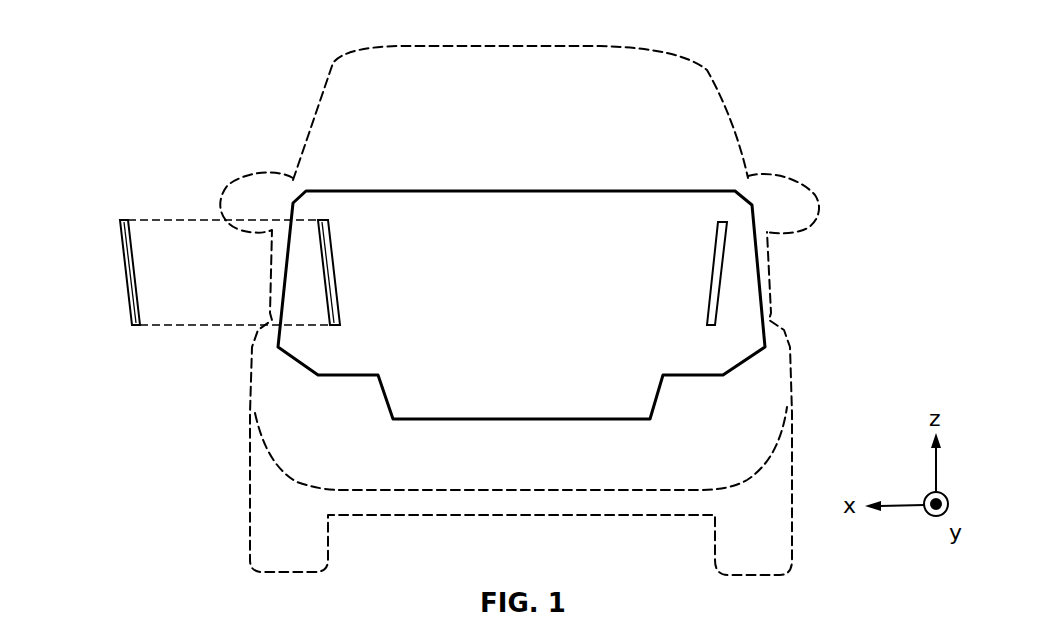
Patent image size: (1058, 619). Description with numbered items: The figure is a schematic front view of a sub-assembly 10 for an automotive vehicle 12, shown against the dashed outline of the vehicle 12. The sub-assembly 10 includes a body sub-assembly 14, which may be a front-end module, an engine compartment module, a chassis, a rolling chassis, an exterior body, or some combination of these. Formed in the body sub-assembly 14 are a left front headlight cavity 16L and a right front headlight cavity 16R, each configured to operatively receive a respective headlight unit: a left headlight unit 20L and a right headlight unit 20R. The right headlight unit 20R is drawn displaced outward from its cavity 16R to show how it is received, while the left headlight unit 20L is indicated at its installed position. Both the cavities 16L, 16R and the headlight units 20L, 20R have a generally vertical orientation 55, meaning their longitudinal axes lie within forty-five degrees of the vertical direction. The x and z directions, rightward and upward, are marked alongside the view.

The sub-assembly 10 is at (485, 310).
The generally vertical orientation 55 is at (485, 310).
The automotive vehicle 12 is at (725, 110).
The body sub-assembly 14 is at (523, 190).
The right front headlight cavity 16R is at (333, 260).
The left front headlight cavity 16L is at (713, 263).
The right headlight unit 20R is at (128, 283).
The left headlight unit 20L is at (713, 263).